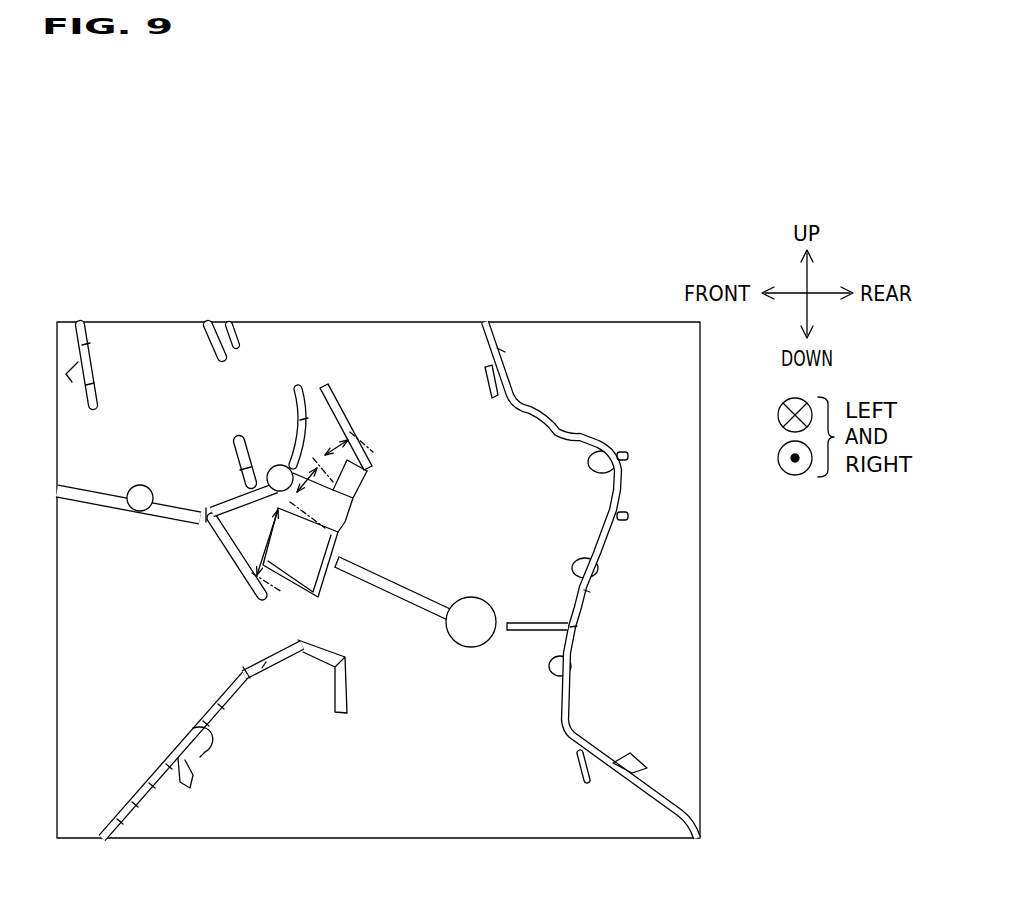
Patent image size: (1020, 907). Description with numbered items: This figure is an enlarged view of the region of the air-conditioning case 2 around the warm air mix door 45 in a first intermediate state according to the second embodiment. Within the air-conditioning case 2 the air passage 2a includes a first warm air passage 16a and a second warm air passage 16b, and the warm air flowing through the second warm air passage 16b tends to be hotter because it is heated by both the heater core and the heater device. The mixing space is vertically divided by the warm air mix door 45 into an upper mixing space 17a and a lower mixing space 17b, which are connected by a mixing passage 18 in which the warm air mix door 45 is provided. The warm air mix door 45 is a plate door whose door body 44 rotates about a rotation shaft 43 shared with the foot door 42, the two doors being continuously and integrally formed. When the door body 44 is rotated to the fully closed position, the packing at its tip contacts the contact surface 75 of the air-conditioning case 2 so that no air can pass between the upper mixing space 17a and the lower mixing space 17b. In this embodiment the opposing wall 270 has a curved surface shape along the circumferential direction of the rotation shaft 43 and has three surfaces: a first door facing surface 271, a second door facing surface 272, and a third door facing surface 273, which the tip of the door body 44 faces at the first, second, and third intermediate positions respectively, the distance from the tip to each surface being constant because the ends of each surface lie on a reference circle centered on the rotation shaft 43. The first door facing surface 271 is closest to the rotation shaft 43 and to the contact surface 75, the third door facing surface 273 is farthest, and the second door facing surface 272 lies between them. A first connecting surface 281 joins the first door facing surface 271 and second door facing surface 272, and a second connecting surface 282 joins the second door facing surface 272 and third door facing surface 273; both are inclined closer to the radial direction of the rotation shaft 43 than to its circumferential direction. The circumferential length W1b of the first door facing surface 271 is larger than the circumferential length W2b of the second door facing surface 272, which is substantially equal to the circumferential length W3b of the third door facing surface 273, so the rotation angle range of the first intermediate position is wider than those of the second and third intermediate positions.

The air-conditioning case 2 is at (620, 490).
The air passage 2a is at (620, 475).
The first warm air passage 16a is at (277, 660).
The second warm air passage 16b is at (232, 697).
The upper mixing space 17a is at (593, 557).
The lower mixing space 17b is at (570, 655).
The mixing passage 18 is at (505, 622).
The foot door 42 is at (569, 636).
The rotation shaft 43 is at (472, 637).
The door body 44 is at (421, 607).
The warm air mix door 45 is at (569, 657).
The contact surface 75 is at (305, 640).
The opposing wall 270 is at (403, 404).
The first door facing surface 271 is at (342, 560).
The second door facing surface 272 is at (358, 525).
The third door facing surface 273 is at (357, 484).
The first connecting surface 281 is at (352, 550).
The second connecting surface 282 is at (354, 503).
The circumferential length of the first door facing surface W1b is at (277, 508).
The circumferential length of the second door facing surface W2b is at (300, 485).
The circumferential length of the third door facing surface W3b is at (345, 440).